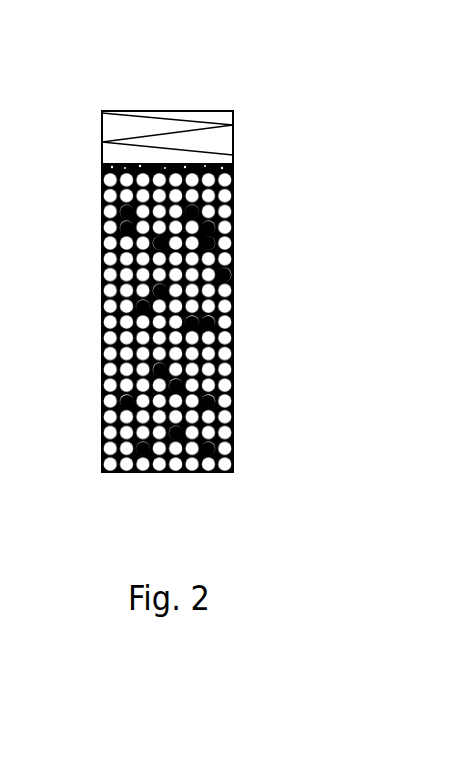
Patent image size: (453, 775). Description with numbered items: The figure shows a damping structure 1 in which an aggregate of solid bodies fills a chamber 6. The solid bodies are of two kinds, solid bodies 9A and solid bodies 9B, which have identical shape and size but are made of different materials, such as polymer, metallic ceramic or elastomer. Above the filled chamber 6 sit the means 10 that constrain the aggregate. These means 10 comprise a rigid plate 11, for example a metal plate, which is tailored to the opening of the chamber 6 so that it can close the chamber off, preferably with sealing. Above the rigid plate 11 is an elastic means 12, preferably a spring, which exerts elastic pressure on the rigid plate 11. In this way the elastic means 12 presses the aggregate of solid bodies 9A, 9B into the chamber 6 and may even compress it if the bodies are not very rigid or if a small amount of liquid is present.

The damping structure 1 is at (101, 100).
The means 10 is at (192, 92).
The elastic means 12 is at (200, 123).
The rigid plate 11 is at (233, 165).
The chamber 6 is at (244, 420).
The solid bodies 9A is at (103, 302).
The solid bodies 9B is at (103, 450).